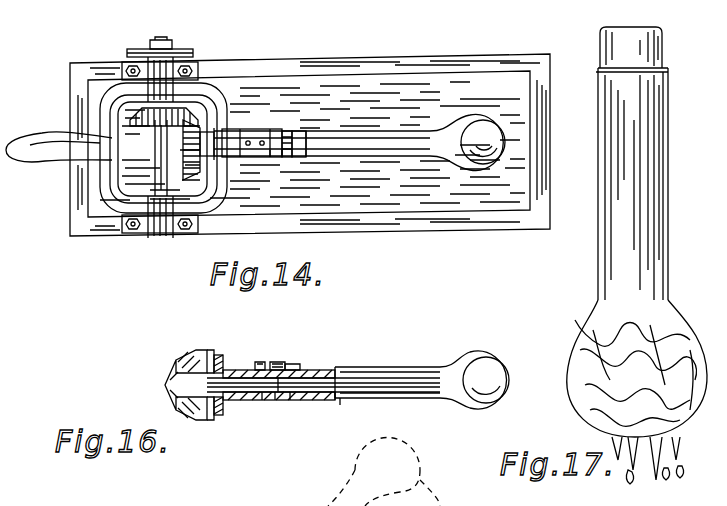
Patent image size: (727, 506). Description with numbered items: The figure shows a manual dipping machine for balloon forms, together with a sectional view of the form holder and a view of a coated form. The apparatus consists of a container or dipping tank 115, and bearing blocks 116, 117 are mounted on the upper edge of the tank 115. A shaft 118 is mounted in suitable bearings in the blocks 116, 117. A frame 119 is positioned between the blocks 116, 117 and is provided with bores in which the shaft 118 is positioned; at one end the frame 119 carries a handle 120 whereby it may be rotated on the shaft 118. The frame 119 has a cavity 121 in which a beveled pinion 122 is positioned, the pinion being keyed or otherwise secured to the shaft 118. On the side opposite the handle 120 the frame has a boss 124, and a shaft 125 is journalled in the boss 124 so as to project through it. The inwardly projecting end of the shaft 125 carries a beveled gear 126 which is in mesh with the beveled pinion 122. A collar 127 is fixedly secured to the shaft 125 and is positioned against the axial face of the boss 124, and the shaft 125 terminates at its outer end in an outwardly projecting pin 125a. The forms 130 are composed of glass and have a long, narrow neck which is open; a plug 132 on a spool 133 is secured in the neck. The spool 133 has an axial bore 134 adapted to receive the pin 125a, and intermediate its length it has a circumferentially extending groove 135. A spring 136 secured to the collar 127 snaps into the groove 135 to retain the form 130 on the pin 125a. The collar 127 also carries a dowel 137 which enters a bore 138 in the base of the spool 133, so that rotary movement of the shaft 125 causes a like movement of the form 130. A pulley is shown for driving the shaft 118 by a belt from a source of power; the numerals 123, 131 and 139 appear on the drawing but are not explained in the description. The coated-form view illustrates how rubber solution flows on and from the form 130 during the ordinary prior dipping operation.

In FIG. 14, the dipping tank 115 is at (414, 58).
In FIG. 14, the bearing block 116 is at (185, 72).
In FIG. 14, the bearing block 117 is at (160, 236).
In FIG. 14, the shaft 118 is at (125, 172).
In FIG. 14, the frame 119 is at (110, 108).
In FIG. 16, the frame 119 is at (220, 355).
In FIG. 14, the handle 120 is at (58, 164).
In FIG. 14, the cavity 121 is at (125, 132).
In FIG. 14, the beveled pinion 122 is at (208, 108).
In FIG. 16, the beveled pinion 122 is at (170, 360).
In FIG. 14, the horizontal shaft 123 is at (162, 152).
In FIG. 16, the boss 124 is at (235, 370).
In FIG. 16, the shaft 125 is at (255, 400).
In FIG. 16, the pin 125a is at (291, 400).
In FIG. 14, the beveled gear 126 is at (255, 120).
In FIG. 16, the beveled gear 126 is at (188, 352).
In FIG. 14, the collar 127 is at (287, 131).
In FIG. 16, the collar 127 is at (276, 400).
In FIG. 14, the form 130 is at (478, 114).
In FIG. 16, the form 130 is at (505, 334).
In FIG. 14, the coupling 131 is at (306, 157).
In FIG. 16, the plug 132 is at (334, 398).
In FIG. 14, the spool 133 is at (266, 157).
In FIG. 16, the spool 133 is at (288, 347).
In FIG. 16, the axial bore 134 is at (341, 400).
In FIG. 14, the groove 135 is at (284, 157).
In FIG. 16, the groove 135 is at (264, 400).
In FIG. 14, the spring 136 is at (300, 131).
In FIG. 16, the spring 136 is at (292, 364).
In FIG. 16, the dowel 137 is at (260, 362).
In FIG. 16, the bore 138 is at (279, 392).
In FIG. 14, the pulley 139 is at (172, 48).
In FIG. 16, the pulley 139 is at (375, 355).